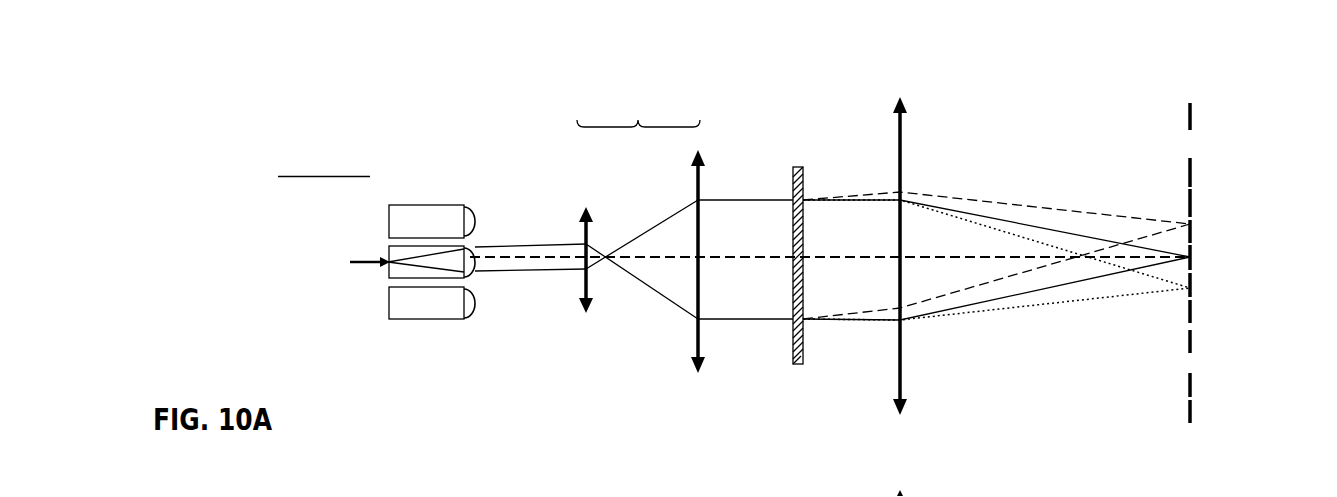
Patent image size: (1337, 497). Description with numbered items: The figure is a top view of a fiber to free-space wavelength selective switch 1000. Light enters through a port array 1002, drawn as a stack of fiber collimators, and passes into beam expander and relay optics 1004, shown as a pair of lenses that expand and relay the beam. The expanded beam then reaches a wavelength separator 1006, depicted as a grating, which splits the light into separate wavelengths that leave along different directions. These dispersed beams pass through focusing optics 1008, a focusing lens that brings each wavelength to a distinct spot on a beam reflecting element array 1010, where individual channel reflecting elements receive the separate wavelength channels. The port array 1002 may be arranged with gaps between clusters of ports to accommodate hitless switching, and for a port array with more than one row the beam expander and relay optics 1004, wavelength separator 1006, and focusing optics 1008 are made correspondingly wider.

The wavelength selective switch 1000 is at (188, 122).
The port array 1002 is at (428, 205).
The beam expander and relay optics 1004 is at (639, 119).
The wavelength separator 1006 is at (797, 167).
The focusing optics 1008 is at (902, 130).
The beam reflecting element array 1010 is at (1200, 127).